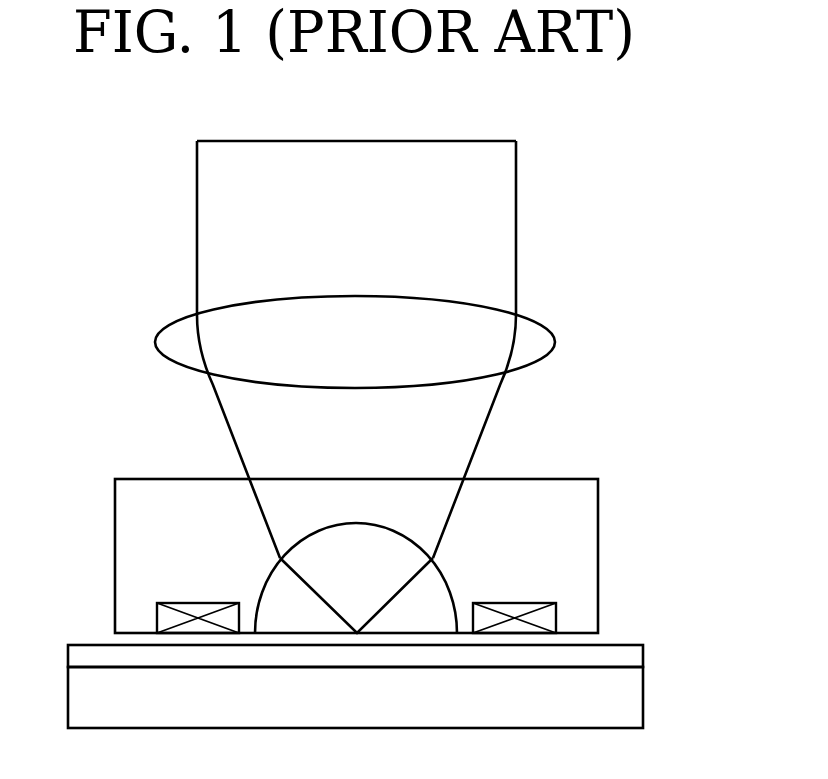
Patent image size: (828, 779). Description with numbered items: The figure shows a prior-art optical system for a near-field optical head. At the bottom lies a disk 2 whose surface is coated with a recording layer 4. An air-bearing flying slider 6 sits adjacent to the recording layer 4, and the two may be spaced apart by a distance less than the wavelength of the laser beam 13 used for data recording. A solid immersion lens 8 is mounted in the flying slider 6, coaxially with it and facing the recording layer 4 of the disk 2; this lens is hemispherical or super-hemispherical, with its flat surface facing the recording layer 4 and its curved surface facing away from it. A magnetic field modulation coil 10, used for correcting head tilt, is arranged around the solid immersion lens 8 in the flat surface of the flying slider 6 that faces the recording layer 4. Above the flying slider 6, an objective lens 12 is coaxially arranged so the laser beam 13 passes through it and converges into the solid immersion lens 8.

The disk 2 is at (637, 705).
The recording layer 4 is at (637, 660).
The air-bearing flying slider 6 is at (578, 512).
The solid immersion lens 8 is at (433, 581).
The magnetic field modulation coil 10 is at (552, 622).
The objective lens 12 is at (552, 343).
The laser beam 13 is at (502, 227).